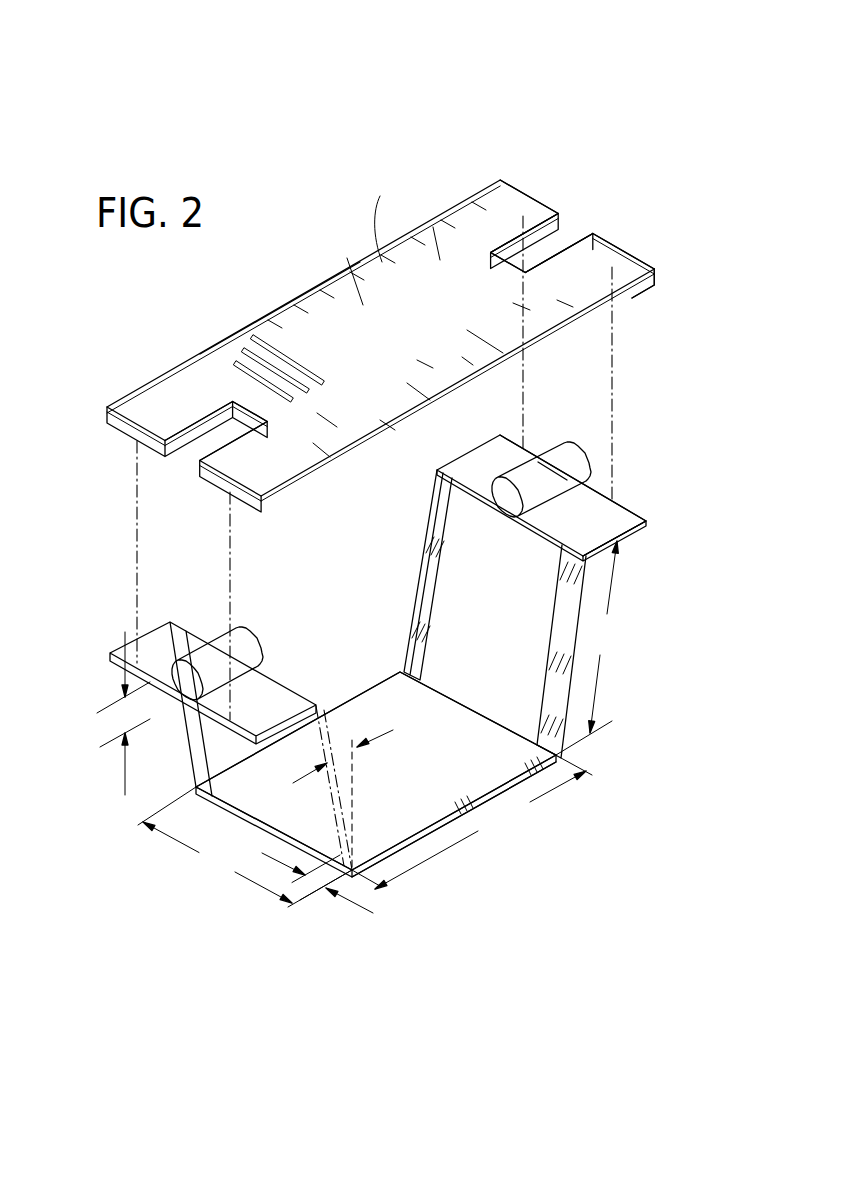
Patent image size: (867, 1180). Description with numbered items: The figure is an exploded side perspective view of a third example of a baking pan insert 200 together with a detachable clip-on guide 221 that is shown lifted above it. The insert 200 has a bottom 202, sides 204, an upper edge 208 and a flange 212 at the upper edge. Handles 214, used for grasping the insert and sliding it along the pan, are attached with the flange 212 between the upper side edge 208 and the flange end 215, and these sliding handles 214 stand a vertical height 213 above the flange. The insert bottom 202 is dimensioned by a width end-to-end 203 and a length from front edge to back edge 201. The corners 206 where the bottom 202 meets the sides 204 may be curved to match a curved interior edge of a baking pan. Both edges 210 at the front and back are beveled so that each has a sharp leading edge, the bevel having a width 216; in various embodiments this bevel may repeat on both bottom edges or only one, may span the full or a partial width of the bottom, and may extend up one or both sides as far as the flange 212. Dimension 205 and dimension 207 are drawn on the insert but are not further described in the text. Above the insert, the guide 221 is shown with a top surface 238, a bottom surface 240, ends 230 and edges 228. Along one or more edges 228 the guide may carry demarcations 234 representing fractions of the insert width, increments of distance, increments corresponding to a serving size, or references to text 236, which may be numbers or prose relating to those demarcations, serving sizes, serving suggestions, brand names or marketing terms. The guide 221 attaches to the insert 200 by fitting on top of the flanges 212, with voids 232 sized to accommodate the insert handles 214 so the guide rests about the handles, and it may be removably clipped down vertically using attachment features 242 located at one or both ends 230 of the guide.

The baking pan insert 200 is at (512, 931).
The length front-edge to back-edge 201 is at (245, 847).
The bottom 202 is at (417, 706).
The width end-to-end 203 is at (472, 823).
The sides 204 is at (447, 582).
The upright height dimension 205 is at (593, 648).
The corners 206 is at (403, 865).
The upright offset dimension 207 is at (350, 746).
The upper edge 208 is at (462, 493).
The edges 210 is at (523, 780).
The flange 212 is at (593, 492).
The vertical height 213 is at (118, 729).
The handles 214 is at (577, 447).
The flange end 215 is at (623, 507).
The bevel width 216 is at (316, 886).
The clip-on guide 221 is at (490, 112).
The edges 228 is at (326, 290).
The ends 230 is at (528, 194).
The voids 232 is at (188, 458).
The demarcations 234 is at (425, 233).
The text 236 is at (249, 340).
The top surface 238 is at (350, 260).
The bottom surface 240 is at (386, 433).
The attachment features 242 is at (650, 290).